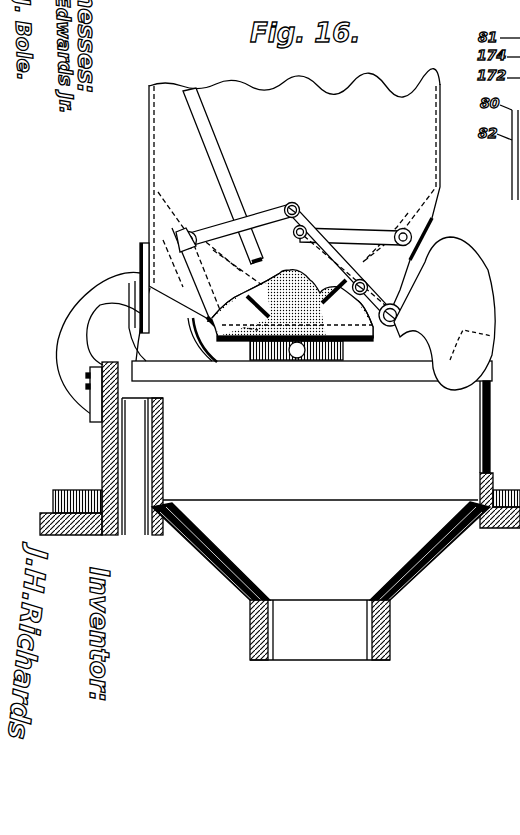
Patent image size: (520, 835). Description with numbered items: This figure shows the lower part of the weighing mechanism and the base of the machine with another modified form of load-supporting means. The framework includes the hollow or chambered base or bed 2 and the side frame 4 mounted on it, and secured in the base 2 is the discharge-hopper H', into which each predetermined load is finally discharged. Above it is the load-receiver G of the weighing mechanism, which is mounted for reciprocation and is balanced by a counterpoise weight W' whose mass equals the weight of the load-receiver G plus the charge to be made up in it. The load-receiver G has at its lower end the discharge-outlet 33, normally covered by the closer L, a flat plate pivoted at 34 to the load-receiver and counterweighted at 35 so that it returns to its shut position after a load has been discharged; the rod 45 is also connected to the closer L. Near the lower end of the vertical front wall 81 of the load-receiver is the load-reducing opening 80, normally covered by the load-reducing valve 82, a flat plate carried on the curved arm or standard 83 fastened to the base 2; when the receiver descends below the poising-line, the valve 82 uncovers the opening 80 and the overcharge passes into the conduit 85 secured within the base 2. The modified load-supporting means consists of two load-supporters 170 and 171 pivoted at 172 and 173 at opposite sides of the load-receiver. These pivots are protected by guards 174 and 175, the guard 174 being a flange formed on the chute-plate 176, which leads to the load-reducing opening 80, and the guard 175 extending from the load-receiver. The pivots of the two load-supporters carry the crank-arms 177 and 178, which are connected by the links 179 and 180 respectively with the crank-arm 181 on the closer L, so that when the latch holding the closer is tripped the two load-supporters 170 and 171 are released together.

The hollow or chambered base or bed 2 is at (492, 420).
The side frame 4 is at (202, 347).
The discharge-outlet 33 is at (200, 355).
The pivot of the closer 34 is at (402, 314).
The counterweight 35 is at (487, 316).
The rod 45 is at (205, 130).
The load-reducing opening 80 is at (140, 243).
The vertical front wall 81 is at (150, 190).
The load-reducing valve 82 is at (140, 264).
The curved arm or standard 83 is at (82, 310).
The conduit 85 is at (165, 445).
The load-supporter 170 is at (266, 290).
The load-supporter 171 is at (255, 288).
The pivot 172 is at (192, 231).
The pivot 173 is at (411, 231).
The guard 174 is at (173, 207).
The guard 175 is at (408, 214).
The chute-plate 176 is at (172, 243).
The crank-arm 177 is at (260, 217).
The crank-arm 178 is at (370, 230).
The link 179 is at (297, 207).
The link 180 is at (320, 247).
The crank-arm on the closer 181 is at (400, 294).
The load-receiver G is at (294, 99).
The counterpoise weight W' is at (296, 373).
The closer L is at (357, 300).
The discharge-hopper H' is at (321, 581).